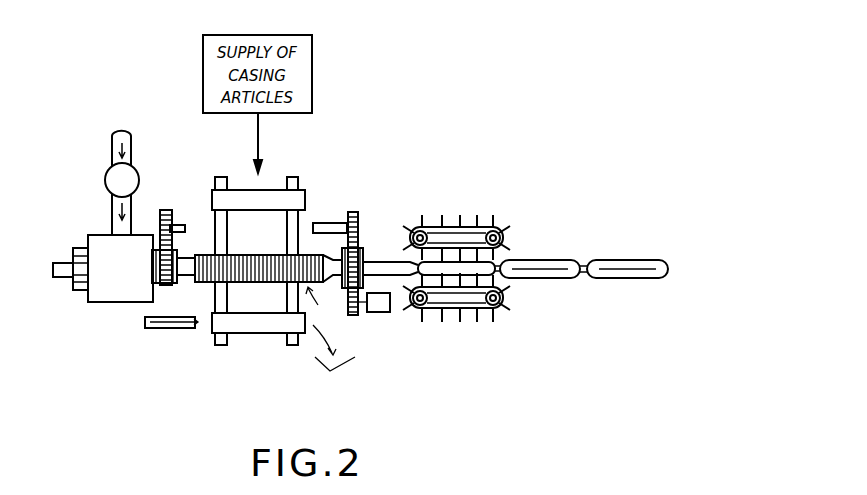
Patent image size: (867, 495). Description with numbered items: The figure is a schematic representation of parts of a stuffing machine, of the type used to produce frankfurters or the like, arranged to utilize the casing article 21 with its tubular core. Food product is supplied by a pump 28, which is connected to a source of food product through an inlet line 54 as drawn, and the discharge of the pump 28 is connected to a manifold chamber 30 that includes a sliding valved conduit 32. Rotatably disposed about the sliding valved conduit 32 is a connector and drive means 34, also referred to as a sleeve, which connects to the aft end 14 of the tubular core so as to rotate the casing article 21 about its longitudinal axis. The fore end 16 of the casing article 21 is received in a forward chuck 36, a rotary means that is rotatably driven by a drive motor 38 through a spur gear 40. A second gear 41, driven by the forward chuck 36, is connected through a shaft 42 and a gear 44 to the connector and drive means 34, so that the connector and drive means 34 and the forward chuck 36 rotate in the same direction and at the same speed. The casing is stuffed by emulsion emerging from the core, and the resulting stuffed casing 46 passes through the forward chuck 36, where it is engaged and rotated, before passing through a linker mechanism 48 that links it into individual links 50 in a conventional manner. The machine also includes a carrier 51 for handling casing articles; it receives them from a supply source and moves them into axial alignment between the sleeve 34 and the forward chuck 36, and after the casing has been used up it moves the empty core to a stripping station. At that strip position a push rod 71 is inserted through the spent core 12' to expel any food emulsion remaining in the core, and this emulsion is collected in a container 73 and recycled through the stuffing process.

The pump 28 is at (105, 180).
The manifold chamber 30 is at (140, 303).
The sliding valved conduit 32 is at (78, 250).
The supply pipe 54 is at (63, 280).
The push rod 71 is at (193, 330).
The connector and drive means 34 is at (170, 284).
The gear 44 is at (166, 210).
The shaft 42 is at (181, 225).
The aft end 14 is at (189, 258).
The spent core 12' is at (258, 276).
The carrier 51 is at (290, 243).
The fore end 16 is at (335, 259).
The casing article 21 is at (324, 321).
The container 73 is at (355, 370).
The spur gear 40 is at (356, 316).
The second gear 41 is at (360, 255).
The drive motor 38 is at (386, 313).
The forward chuck 36 is at (383, 262).
The stuffed casing 46 is at (398, 262).
The linker mechanism 48 is at (478, 215).
The individual links 50 is at (612, 258).